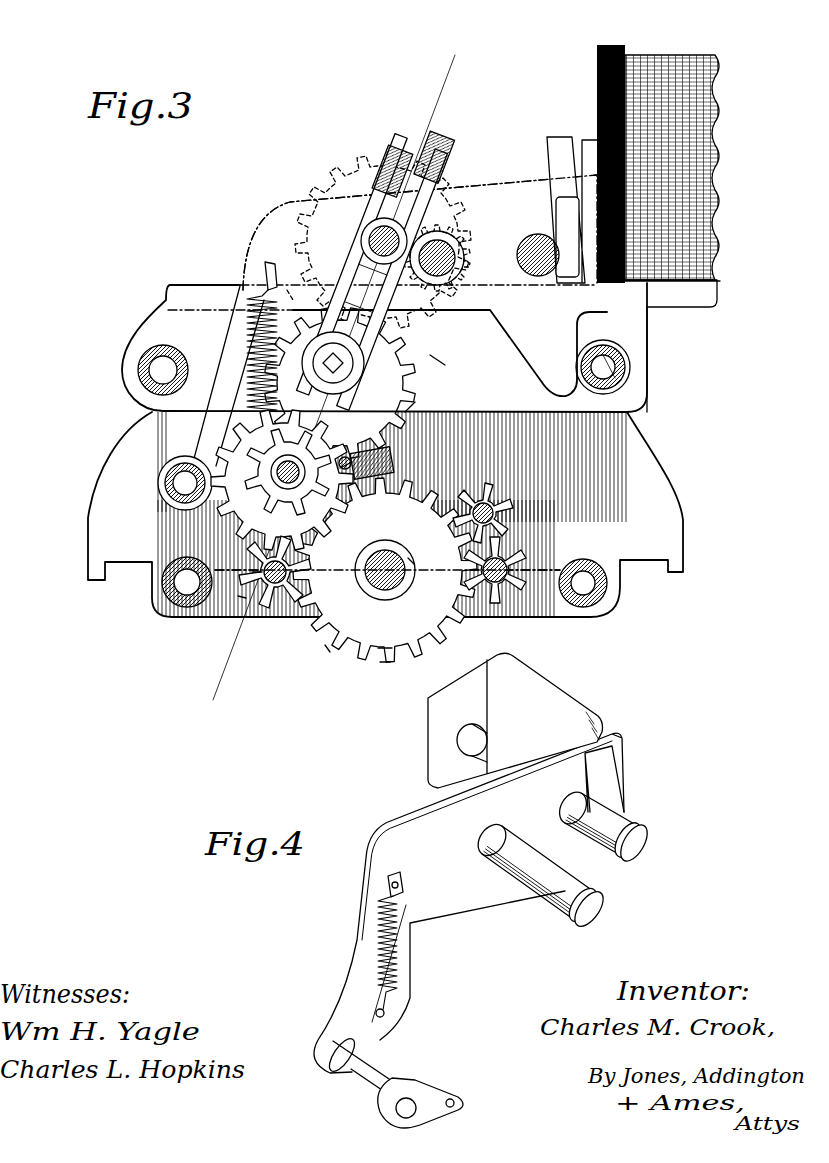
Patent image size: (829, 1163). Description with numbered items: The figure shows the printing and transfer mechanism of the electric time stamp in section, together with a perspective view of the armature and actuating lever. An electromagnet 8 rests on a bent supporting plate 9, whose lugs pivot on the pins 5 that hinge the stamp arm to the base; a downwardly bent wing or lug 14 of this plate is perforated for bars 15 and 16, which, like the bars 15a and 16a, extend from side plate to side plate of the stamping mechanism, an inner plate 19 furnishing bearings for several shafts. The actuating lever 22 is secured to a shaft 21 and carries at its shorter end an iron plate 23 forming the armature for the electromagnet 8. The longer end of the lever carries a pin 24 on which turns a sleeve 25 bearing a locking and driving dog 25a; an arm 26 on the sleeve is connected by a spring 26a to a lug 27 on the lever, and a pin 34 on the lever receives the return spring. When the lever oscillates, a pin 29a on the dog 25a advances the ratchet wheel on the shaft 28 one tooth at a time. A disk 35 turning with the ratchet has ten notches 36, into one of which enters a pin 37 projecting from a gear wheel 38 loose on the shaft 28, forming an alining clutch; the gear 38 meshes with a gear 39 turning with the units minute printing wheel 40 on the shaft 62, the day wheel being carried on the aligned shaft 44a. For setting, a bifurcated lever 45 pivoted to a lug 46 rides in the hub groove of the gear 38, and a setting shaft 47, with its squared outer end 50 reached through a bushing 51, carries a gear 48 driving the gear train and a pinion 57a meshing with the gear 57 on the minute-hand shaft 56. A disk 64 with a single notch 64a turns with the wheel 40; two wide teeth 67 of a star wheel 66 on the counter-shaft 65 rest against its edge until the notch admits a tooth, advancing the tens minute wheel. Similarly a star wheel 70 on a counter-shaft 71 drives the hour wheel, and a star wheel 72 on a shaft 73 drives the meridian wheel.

In FIG. 3, the pivot pin 5 is at (216, 597).
In FIG. 3, the electromagnet 8 is at (660, 85).
In FIG. 3, the bent supporting plate 9 is at (423, 50).
In FIG. 3, the wing or lug 14 is at (145, 378).
In FIG. 3, the bar 15 is at (620, 380).
In FIG. 3, the bar 15a is at (600, 600).
In FIG. 3, the bar 16 is at (148, 362).
In FIG. 3, the bar 16a is at (175, 600).
In FIG. 3, the plate 19 is at (600, 452).
In FIG. 3, the shaft 21 is at (532, 237).
In FIG. 4, the shaft 21 is at (645, 822).
In FIG. 3, the actuating lever 22 is at (492, 197).
In FIG. 4, the actuating lever 22 is at (507, 803).
In FIG. 3, the iron plate (armature) 23 is at (556, 145).
In FIG. 4, the iron plate (armature) 23 is at (540, 703).
In FIG. 3, the pin 24 is at (178, 470).
In FIG. 4, the pin 24 is at (410, 1103).
In FIG. 3, the sleeve 25 is at (160, 492).
In FIG. 4, the sleeve 25 is at (372, 1056).
In FIG. 4, the locking and driving dog 25a is at (450, 1086).
In FIG. 3, the arm 26 is at (247, 413).
In FIG. 4, the arm 26 is at (370, 1028).
In FIG. 3, the spring 26a is at (242, 382).
In FIG. 4, the spring 26a is at (398, 943).
In FIG. 3, the lug 27 is at (266, 270).
In FIG. 4, the lug 27 is at (405, 882).
In FIG. 3, the shaft 28 is at (248, 505).
In FIG. 4, the pin 29a is at (456, 1103).
In FIG. 3, the pin 34 is at (442, 258).
In FIG. 4, the pin 34 is at (592, 912).
In FIG. 3, the disk 35 is at (352, 462).
In FIG. 3, the notches or openings 36 is at (390, 474).
In FIG. 3, the pin 37 is at (242, 598).
In FIG. 3, the gear wheel 38 is at (418, 404).
In FIG. 3, the gear wheel 39 is at (323, 648).
In FIG. 3, the units minute printing wheel 40 is at (384, 662).
In FIG. 3, the shaft 44a is at (352, 465).
In FIG. 3, the bifurcated lever 45 is at (366, 216).
In FIG. 3, the lug 46 is at (404, 146).
In FIG. 3, the setting shaft 47 is at (418, 337).
In FIG. 3, the gear 48 is at (408, 377).
In FIG. 3, the outer end of setting shaft 50 is at (364, 355).
In FIG. 3, the bushing 51 is at (430, 355).
In FIG. 3, the shaft 56 is at (437, 247).
In FIG. 3, the gear 57 is at (342, 166).
In FIG. 3, the pinion 57a is at (287, 290).
In FIG. 3, the shaft 62 is at (386, 586).
In FIG. 3, the disk 64 is at (347, 648).
In FIG. 3, the notch 64a is at (385, 660).
In FIG. 3, the counter-shaft 65 is at (505, 592).
In FIG. 3, the star wheel or pinion 66 is at (533, 556).
In FIG. 3, the wide teeth 67 is at (412, 562).
In FIG. 3, the star wheel 70 is at (258, 583).
In FIG. 3, the counter-shaft 71 is at (272, 590).
In FIG. 3, the pinion or star wheel 72 is at (505, 513).
In FIG. 3, the shaft 73 is at (497, 498).